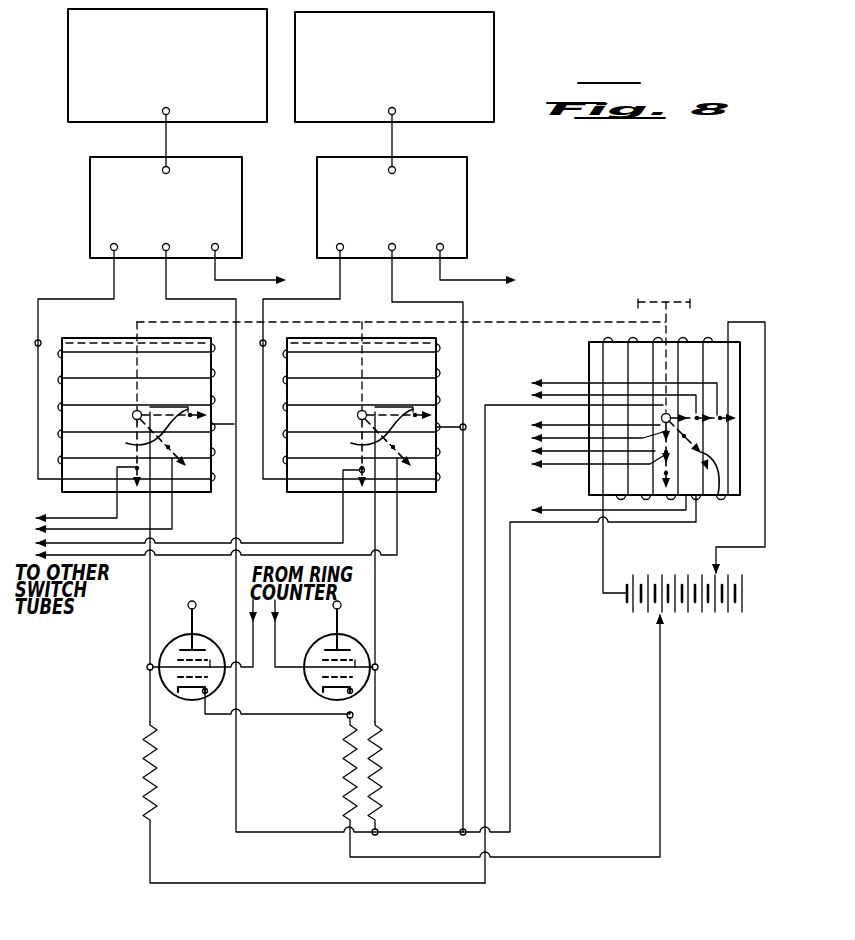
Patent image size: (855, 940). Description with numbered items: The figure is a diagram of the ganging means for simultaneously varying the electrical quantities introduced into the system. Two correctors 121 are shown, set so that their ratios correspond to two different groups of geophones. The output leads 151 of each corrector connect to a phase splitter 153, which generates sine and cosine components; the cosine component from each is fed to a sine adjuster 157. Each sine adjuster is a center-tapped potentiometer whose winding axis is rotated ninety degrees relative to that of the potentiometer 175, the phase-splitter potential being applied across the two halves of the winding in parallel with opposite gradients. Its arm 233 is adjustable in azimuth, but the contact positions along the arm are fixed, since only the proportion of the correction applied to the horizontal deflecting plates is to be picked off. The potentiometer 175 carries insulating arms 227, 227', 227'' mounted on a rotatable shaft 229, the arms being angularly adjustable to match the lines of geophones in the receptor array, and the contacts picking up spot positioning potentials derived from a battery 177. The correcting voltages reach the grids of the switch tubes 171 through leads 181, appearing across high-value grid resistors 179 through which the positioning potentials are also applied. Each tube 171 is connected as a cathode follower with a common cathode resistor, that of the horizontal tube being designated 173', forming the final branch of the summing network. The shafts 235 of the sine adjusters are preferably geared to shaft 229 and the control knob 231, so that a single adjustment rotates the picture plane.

The corrector 121 is at (112, 122).
The output lead 151 is at (168, 133).
The phase splitter 153 is at (317, 212).
The sine adjuster 157 is at (119, 338).
The shaft 235 is at (135, 363).
The arm 233 is at (127, 443).
The potentiometer 175 is at (592, 350).
The control knob 231 is at (639, 302).
The rotatable shaft 229 is at (668, 340).
The insulating arm 227 is at (730, 443).
The insulating arm 227' is at (707, 473).
The insulating arm 227'' is at (597, 476).
The battery 177 is at (707, 606).
The lead 181 is at (148, 630).
The switch tube 171 is at (191, 634).
The grid resistor 179 is at (142, 763).
The cathode resistor 173' is at (473, 736).